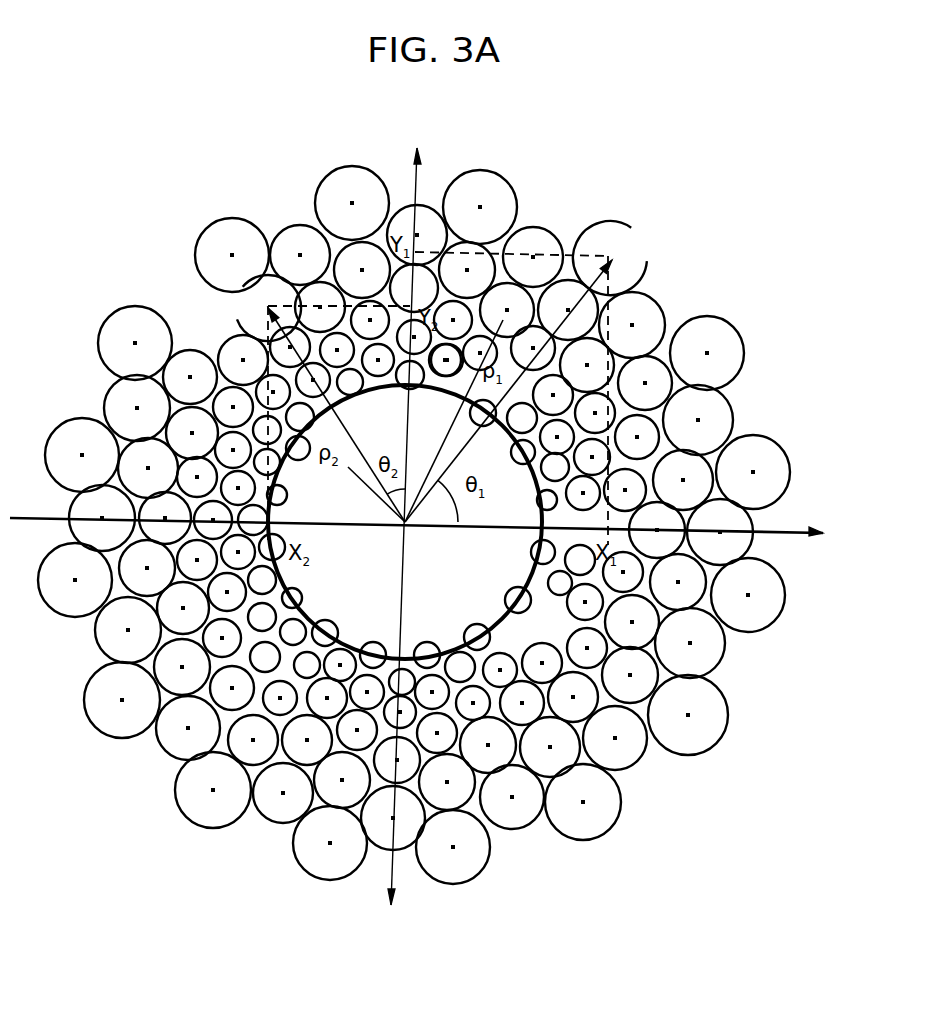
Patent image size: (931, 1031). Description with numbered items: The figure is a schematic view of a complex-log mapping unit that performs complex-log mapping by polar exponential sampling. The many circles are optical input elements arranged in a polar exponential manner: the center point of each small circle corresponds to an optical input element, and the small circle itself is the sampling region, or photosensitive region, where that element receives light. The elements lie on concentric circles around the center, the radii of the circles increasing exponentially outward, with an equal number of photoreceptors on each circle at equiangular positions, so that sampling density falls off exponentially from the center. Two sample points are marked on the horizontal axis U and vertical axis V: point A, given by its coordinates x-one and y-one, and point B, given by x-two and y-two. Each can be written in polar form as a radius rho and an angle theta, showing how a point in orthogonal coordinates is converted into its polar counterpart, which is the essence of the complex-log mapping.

The point A is at (548, 371).
The point B is at (284, 398).
The U axis U is at (430, 535).
The V axis V is at (456, 526).